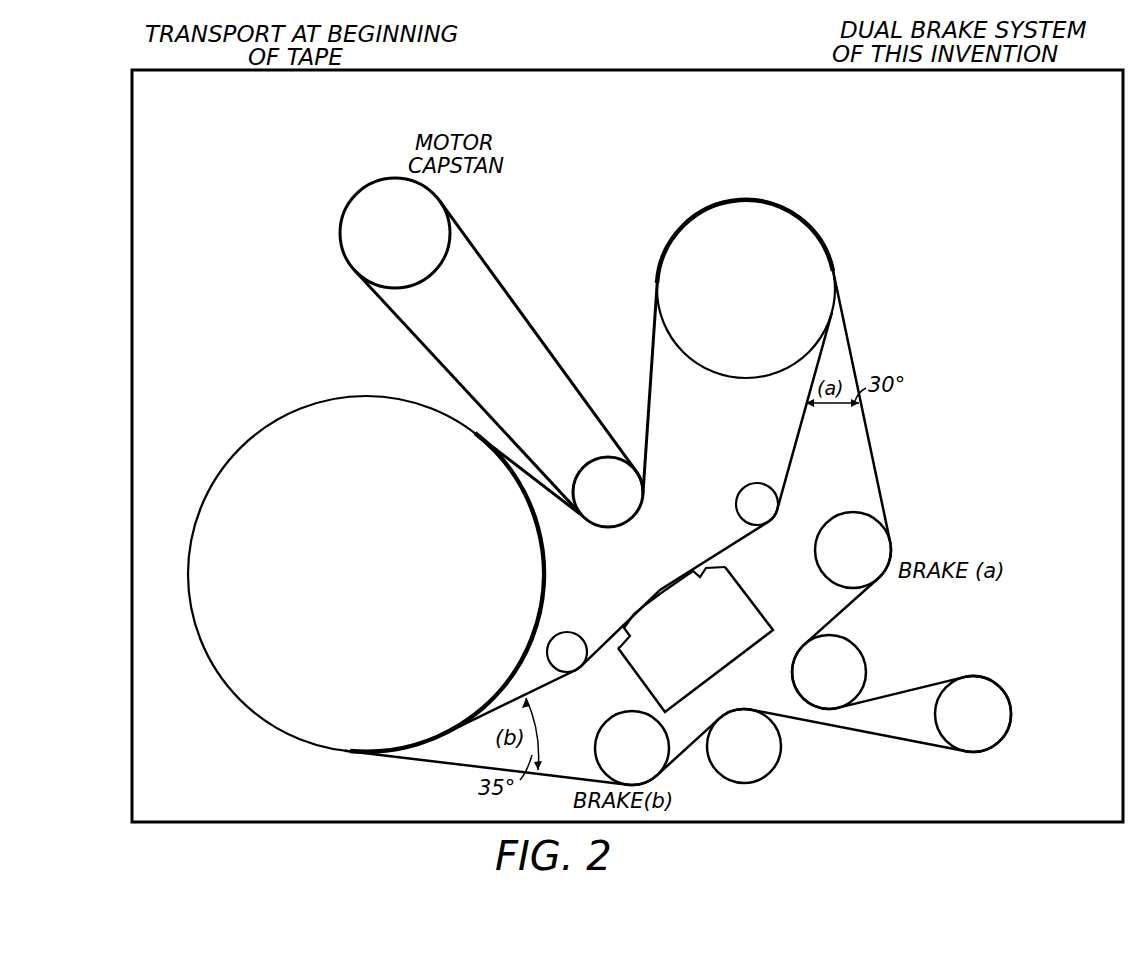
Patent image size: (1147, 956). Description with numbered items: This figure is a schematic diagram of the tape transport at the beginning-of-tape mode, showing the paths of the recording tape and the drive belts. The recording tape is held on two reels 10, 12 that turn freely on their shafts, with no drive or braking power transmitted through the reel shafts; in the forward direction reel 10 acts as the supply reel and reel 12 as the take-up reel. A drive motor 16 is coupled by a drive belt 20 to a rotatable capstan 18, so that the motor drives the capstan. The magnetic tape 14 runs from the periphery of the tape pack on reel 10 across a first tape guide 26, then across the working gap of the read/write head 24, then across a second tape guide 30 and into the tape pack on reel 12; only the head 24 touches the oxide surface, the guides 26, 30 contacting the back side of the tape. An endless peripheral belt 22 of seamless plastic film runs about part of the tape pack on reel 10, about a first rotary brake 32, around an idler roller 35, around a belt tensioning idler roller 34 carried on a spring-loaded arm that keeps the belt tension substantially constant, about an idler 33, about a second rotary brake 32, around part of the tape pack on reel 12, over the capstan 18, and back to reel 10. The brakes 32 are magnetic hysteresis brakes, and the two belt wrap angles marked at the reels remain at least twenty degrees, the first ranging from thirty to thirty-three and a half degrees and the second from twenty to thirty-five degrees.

The reel 10 is at (273, 425).
The reel 12 is at (758, 201).
The magnetic tape 14 is at (727, 546).
The drive motor 16 is at (386, 179).
The capstan 18 is at (641, 496).
The drive belt 20 is at (490, 263).
The peripheral belt 22 is at (866, 446).
The read/write head 24 is at (742, 596).
The first tape guide 26 is at (567, 632).
The second tape guide 30 is at (755, 484).
The rotary brake 32 is at (886, 541).
The idler 33 is at (848, 650).
The belt tensioning idler roller 34 is at (980, 690).
The idler roller 35 is at (724, 782).